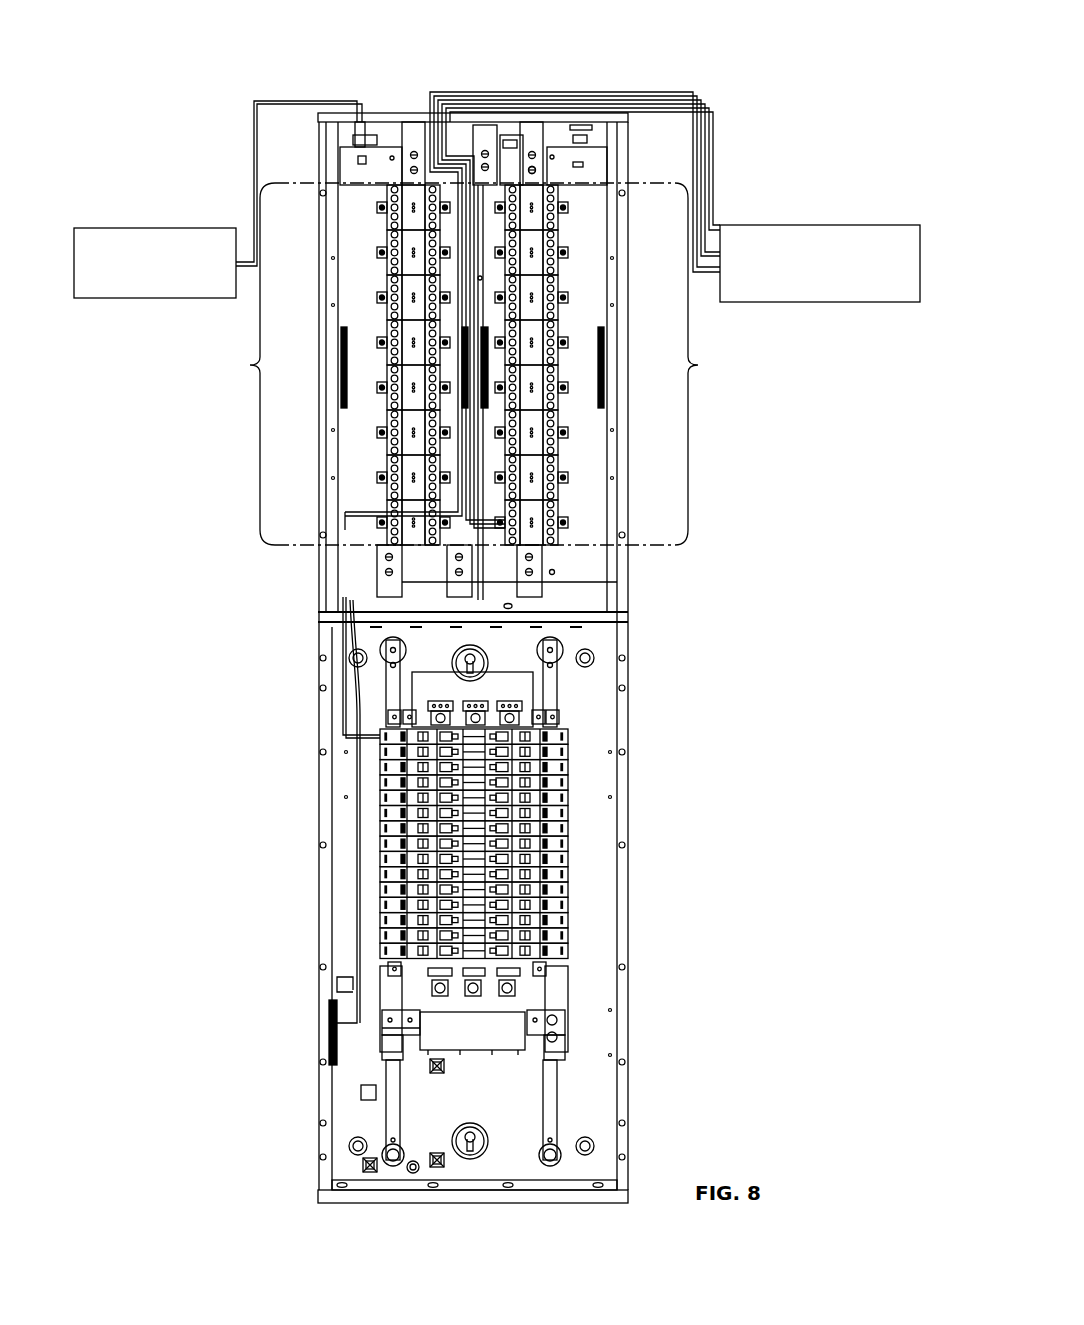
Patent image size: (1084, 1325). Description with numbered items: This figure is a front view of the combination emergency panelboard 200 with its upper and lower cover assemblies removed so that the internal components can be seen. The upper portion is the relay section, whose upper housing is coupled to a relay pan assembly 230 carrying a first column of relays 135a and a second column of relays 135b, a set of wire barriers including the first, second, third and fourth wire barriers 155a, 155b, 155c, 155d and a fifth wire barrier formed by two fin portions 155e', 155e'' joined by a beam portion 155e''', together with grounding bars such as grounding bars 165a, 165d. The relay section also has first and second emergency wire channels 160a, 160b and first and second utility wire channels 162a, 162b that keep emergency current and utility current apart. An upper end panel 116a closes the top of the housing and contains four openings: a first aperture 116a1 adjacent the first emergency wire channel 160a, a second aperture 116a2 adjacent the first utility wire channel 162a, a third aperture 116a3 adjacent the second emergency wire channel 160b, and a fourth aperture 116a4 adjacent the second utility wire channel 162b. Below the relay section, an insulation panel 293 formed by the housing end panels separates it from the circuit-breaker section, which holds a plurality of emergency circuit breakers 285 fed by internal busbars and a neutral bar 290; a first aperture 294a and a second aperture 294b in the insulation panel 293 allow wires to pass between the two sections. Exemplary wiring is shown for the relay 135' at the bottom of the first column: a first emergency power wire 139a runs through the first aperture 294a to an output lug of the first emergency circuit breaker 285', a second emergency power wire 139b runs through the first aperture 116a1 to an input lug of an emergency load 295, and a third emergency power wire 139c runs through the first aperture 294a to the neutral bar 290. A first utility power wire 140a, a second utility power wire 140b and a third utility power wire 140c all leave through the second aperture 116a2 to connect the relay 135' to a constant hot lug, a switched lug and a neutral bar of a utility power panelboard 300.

The combination emergency panelboard 200 is at (703, 75).
The relay pan assembly 230 is at (585, 552).
The first column of relays 135a is at (226, 422).
The second column of relays 135b is at (721, 422).
The relay 135' is at (337, 474).
The first utility wire channel 162a is at (463, 140).
The second utility wire channel 162b is at (597, 163).
The first emergency wire channel 160a is at (348, 175).
The second emergency wire channel 160b is at (507, 167).
The upper end panel 116a is at (373, 110).
The first aperture 116a1 is at (385, 108).
The second aperture 116a2 is at (423, 110).
The third aperture 116a3 is at (510, 110).
The fourth aperture 116a4 is at (583, 113).
The first wire barrier 155a is at (383, 120).
The second wire barrier 155b is at (385, 560).
The third wire barrier 155c is at (537, 168).
The fourth wire barrier 155d is at (462, 592).
The fin portion 155e' is at (473, 101).
The fin portion 155e'' is at (559, 602).
The beam portion 155e''' is at (623, 306).
The grounding bar 165a is at (340, 380).
The grounding bar 165d is at (600, 380).
The first emergency power wire 139a is at (355, 570).
The second emergency power wire 139b is at (254, 183).
The third emergency power wire 139c is at (345, 612).
The first utility power wire 140a is at (707, 165).
The second utility power wire 140b is at (703, 190).
The third utility power wire 140c is at (695, 228).
The emergency circuit breakers 285 is at (539, 844).
The first emergency circuit breaker 285' is at (325, 768).
The neutral bar 290 is at (330, 1000).
The insulation panel 293 is at (590, 662).
The first aperture 294a is at (335, 620).
The second aperture 294b is at (557, 612).
The emergency load 295 is at (138, 298).
The utility power panelboard 300 is at (857, 302).